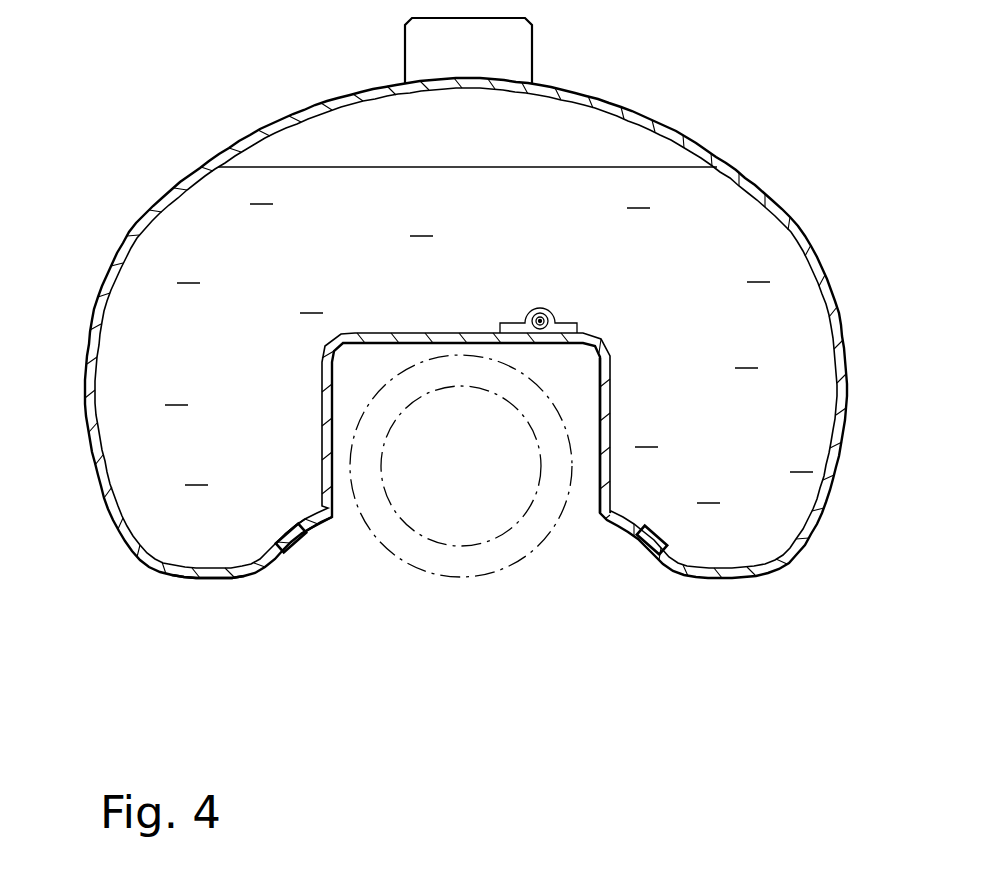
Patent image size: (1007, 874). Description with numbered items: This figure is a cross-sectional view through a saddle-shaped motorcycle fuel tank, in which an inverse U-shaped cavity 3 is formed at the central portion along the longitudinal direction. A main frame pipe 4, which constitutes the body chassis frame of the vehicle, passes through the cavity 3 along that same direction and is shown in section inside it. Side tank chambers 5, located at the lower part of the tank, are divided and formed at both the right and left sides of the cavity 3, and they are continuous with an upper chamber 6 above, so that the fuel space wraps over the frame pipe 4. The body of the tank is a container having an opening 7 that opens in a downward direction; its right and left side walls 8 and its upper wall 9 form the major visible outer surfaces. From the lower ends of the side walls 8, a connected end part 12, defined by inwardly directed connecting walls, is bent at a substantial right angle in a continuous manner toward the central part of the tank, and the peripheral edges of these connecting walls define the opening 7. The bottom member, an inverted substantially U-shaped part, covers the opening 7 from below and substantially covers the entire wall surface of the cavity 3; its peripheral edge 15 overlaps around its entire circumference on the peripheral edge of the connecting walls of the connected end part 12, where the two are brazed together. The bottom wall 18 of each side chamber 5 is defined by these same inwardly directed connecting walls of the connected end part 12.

The inverse U-shaped cavity 3 is at (583, 495).
The main frame pipe 4 is at (453, 578).
The side tank chamber 5 is at (797, 495).
The upper chamber 6 is at (622, 185).
The opening 7 is at (292, 518).
The side wall 8 is at (838, 325).
The upper wall 9 is at (576, 88).
The connected end part 12 is at (284, 533).
The peripheral edge 15 is at (299, 546).
The bottom wall 18 is at (197, 580).